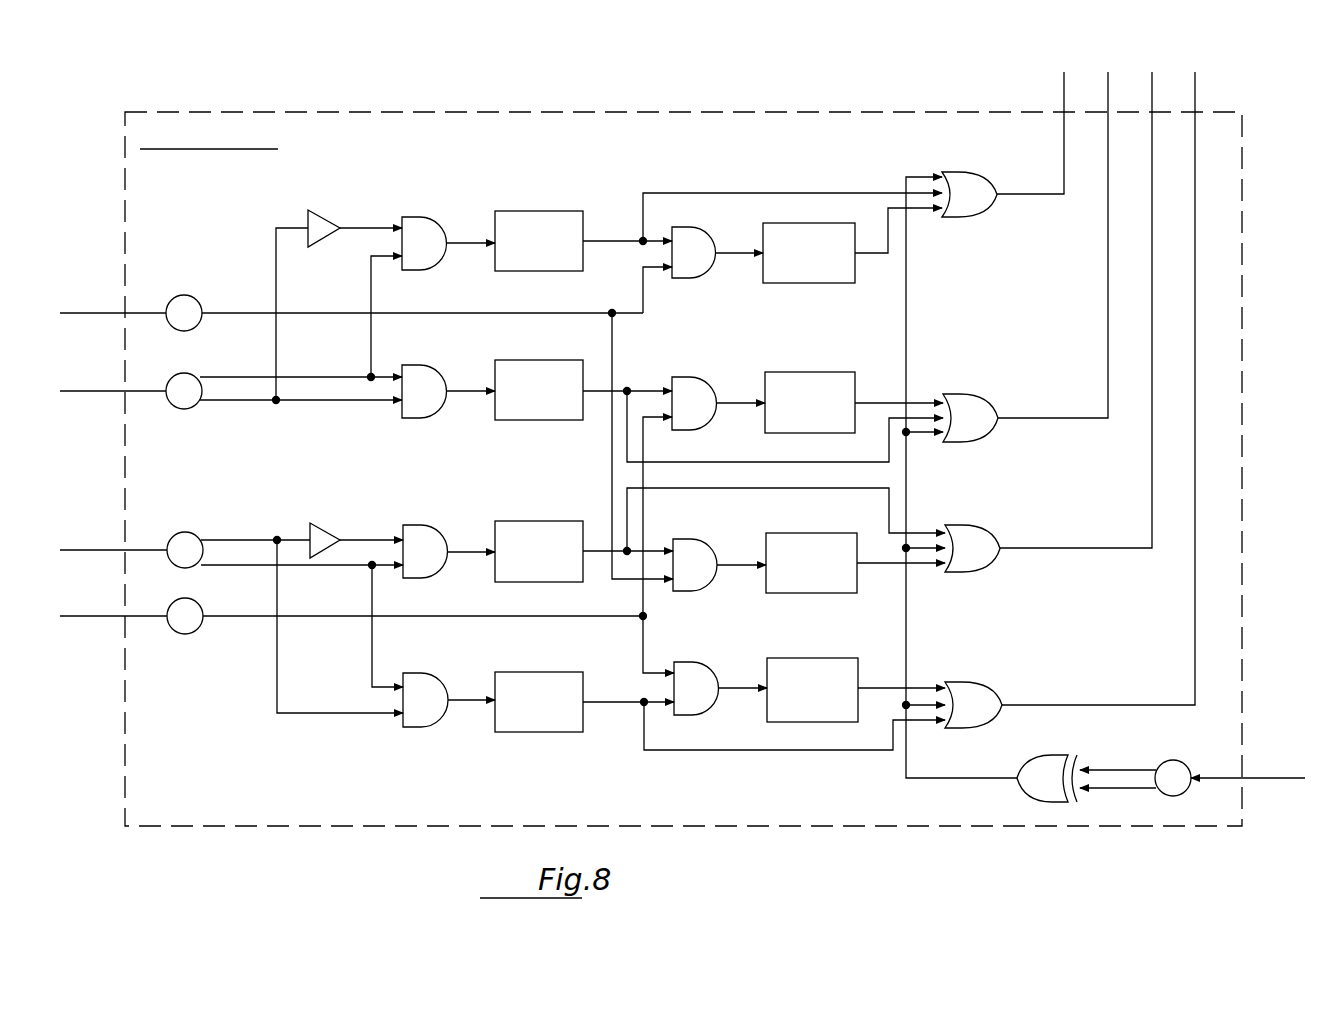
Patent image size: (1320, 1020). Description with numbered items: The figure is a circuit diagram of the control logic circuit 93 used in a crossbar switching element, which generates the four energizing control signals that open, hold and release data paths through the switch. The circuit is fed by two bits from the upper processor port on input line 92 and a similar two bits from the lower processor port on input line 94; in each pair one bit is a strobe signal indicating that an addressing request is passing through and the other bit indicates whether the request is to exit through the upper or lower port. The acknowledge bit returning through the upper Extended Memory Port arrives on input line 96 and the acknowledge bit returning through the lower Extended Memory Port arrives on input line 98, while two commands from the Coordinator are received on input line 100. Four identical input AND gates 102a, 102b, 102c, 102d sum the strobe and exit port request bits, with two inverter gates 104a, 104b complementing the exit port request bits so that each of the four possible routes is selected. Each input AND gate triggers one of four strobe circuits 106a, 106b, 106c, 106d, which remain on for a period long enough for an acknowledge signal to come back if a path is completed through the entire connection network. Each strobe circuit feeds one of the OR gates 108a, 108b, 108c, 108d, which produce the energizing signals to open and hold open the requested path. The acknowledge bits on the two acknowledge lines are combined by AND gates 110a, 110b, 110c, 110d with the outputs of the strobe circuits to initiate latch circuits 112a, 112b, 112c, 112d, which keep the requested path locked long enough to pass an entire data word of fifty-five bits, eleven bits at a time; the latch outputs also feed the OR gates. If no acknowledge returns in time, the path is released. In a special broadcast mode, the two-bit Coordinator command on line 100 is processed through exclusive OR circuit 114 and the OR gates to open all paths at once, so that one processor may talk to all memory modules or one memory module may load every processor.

The control logic circuit 93 is at (125, 191).
The input line 96 is at (86, 311).
The input line 94 is at (80, 393).
The input line 92 is at (86, 547).
The input line 98 is at (86, 620).
The input line 100 is at (1290, 776).
The inverter gate 104a is at (323, 216).
The inverter gate 104b is at (326, 523).
The input AND gate 102a is at (421, 216).
The input AND gate 102b is at (421, 420).
The input AND gate 102c is at (419, 524).
The input AND gate 102d is at (421, 728).
The strobe circuit 106a is at (530, 210).
The strobe circuit 106b is at (540, 421).
The strobe circuit 106c is at (541, 521).
The strobe circuit 106d is at (546, 733).
The AND gate 110a is at (690, 280).
The AND gate 110b is at (691, 378).
The AND gate 110c is at (693, 540).
The AND gate 110d is at (692, 662).
The latch circuit 112a is at (823, 285).
The latch circuit 112b is at (811, 378).
The latch circuit 112c is at (797, 534).
The latch circuit 112d is at (809, 659).
The OR gate 108a is at (958, 176).
The OR gate 108b is at (975, 393).
The OR gate 108c is at (969, 526).
The OR gate 108d is at (969, 682).
The exclusive OR circuit 114 is at (1057, 757).